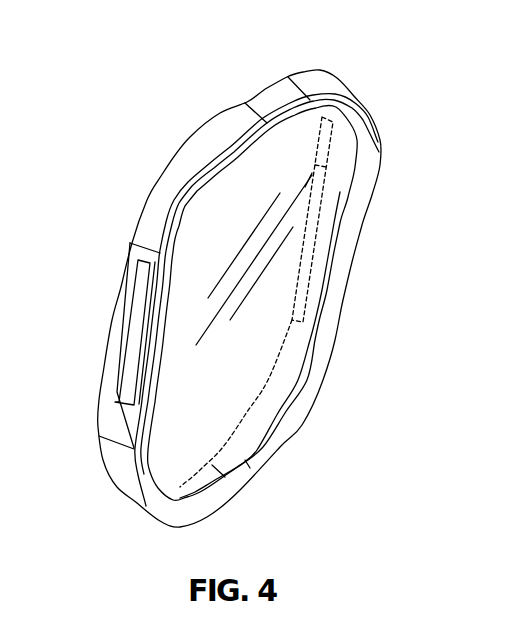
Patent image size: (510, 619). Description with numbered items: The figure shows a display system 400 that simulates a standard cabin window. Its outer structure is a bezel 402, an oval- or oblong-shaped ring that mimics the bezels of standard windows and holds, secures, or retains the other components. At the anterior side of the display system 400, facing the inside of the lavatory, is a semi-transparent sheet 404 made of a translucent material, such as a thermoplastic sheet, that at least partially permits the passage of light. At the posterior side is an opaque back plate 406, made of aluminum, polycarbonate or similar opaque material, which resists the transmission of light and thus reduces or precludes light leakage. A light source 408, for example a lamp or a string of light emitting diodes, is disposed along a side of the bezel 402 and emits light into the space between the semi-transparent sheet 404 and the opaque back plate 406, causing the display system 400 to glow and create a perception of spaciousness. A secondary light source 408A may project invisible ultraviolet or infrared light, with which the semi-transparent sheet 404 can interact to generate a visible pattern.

The display system 400 is at (138, 104).
The bezel 402 is at (270, 102).
The semi-transparent sheet 404 is at (270, 278).
The opaque back plate 406 is at (193, 407).
The light source 408 is at (140, 310).
The secondary light source 408A is at (327, 208).